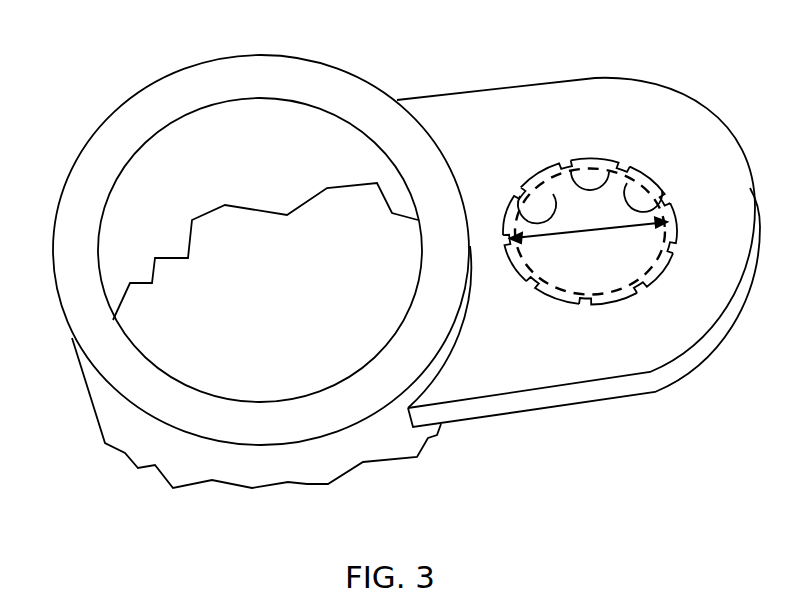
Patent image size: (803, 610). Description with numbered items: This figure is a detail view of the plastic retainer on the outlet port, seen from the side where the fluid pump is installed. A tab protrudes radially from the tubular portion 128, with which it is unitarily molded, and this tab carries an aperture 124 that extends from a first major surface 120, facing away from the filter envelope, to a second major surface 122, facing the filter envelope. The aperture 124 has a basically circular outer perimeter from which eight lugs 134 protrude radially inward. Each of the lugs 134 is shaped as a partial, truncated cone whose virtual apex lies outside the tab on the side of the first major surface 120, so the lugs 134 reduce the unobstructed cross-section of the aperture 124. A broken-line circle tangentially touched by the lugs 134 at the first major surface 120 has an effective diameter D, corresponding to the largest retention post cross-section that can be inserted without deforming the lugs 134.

The first major surface 120 is at (473, 108).
The second major surface 122 is at (578, 407).
The aperture 124 is at (618, 160).
The tubular portion 128 is at (137, 120).
The lugs 134 is at (643, 167).